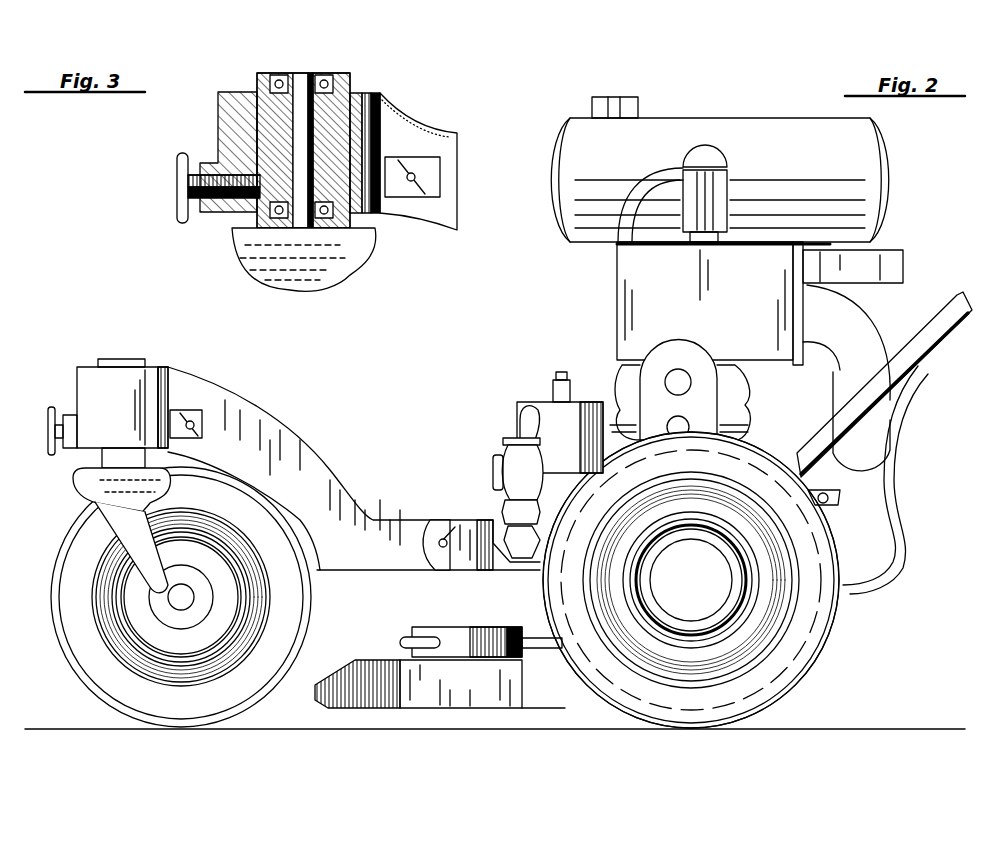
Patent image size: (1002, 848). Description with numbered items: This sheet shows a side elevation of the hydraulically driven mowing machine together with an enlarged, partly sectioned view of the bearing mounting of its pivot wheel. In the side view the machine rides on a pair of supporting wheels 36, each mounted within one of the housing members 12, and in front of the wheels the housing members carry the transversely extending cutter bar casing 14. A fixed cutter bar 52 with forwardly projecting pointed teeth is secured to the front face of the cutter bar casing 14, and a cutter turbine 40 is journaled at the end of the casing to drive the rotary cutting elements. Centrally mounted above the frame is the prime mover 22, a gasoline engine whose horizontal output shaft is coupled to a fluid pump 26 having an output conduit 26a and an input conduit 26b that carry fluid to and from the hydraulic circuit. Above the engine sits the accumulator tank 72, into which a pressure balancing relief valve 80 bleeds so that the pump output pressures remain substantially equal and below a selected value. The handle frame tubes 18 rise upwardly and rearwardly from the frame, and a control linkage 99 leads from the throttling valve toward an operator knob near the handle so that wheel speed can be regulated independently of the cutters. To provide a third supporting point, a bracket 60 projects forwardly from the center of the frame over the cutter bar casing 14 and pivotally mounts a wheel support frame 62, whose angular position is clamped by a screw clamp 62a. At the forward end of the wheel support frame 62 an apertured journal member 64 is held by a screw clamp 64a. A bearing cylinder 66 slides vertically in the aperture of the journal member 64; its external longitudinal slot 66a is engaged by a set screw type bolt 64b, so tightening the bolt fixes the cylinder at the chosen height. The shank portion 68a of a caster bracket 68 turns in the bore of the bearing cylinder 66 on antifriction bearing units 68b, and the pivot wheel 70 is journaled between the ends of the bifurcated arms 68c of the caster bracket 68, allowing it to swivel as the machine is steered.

In FIG. 2, the housing member 12 is at (825, 603).
In FIG. 2, the cutter bar casing 14 is at (496, 712).
In FIG. 2, the handle frame tube 18 is at (935, 318).
In FIG. 2, the prime mover 22 is at (630, 280).
In FIG. 2, the fluid pump 26 is at (655, 362).
In FIG. 2, the output conduit 26a is at (612, 400).
In FIG. 2, the input conduit 26b is at (740, 425).
In FIG. 2, the wheel 36 is at (840, 665).
In FIG. 2, the cutter turbine 40 is at (442, 614).
In FIG. 2, the fixed cutter bar 52 is at (355, 680).
In FIG. 2, the bracket 60 is at (495, 560).
In FIG. 3, the wheel support frame 62 is at (437, 130).
In FIG. 2, the wheel support frame 62 is at (350, 460).
In FIG. 2, the screw clamp 62a is at (440, 540).
In FIG. 3, the journal member 64 is at (372, 94).
In FIG. 2, the journal member 64 is at (160, 367).
In FIG. 3, the screw clamp 64a is at (430, 185).
In FIG. 2, the screw clamp 64a is at (192, 425).
In FIG. 3, the set screw type bolt 64b is at (177, 175).
In FIG. 2, the set screw type bolt 64b is at (48, 428).
In FIG. 3, the bearing cylinder 66 is at (350, 80).
In FIG. 2, the bearing cylinder 66 is at (112, 360).
In FIG. 3, the longitudinal slot 66a is at (232, 95).
In FIG. 3, the caster bracket 68 is at (318, 283).
In FIG. 2, the caster bracket 68 is at (65, 490).
In FIG. 3, the shank portion 68a is at (303, 78).
In FIG. 3, the antifriction bearing unit 68b is at (278, 76).
In FIG. 2, the bifurcated arm 68c is at (150, 575).
In FIG. 2, the pivot wheel 70 is at (60, 675).
In FIG. 2, the accumulator tank 72 is at (555, 405).
In FIG. 2, the pressure balancing relief valve 80 is at (515, 460).
In FIG. 2, the control linkage 99 is at (888, 500).